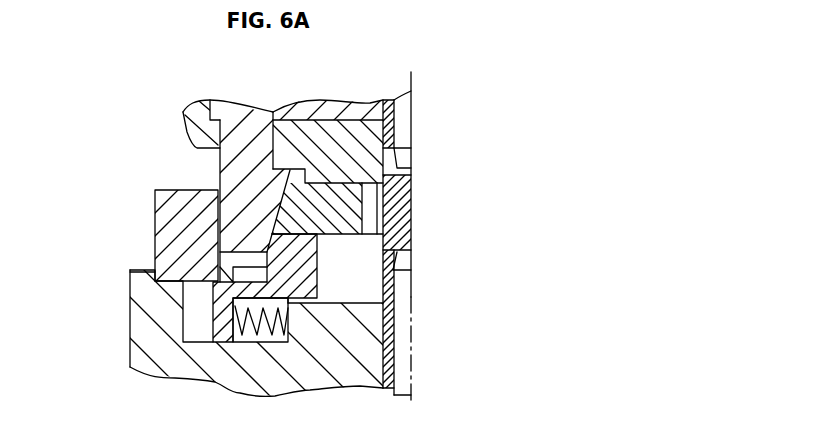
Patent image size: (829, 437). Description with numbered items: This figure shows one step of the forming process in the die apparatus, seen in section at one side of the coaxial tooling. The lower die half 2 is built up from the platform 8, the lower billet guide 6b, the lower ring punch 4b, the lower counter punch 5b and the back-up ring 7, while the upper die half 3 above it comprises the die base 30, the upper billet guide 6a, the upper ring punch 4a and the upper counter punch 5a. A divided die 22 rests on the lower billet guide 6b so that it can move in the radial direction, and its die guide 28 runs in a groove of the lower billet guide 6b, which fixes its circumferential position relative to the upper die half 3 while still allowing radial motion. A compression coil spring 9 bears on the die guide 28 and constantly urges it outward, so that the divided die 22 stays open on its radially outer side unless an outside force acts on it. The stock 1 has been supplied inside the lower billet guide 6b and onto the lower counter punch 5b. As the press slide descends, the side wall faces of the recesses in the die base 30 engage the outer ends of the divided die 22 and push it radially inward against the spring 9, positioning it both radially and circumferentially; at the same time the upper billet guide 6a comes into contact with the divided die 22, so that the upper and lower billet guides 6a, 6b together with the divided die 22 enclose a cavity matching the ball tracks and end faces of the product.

The stock 1 is at (403, 193).
The lower die half 2 is at (103, 353).
The upper die half 3 is at (153, 109).
The upper ring punch 4a is at (391, 102).
The lower ring punch 4b is at (392, 340).
The upper counter punch 5a is at (402, 124).
The lower counter punch 5b is at (404, 291).
The upper billet guide 6a is at (314, 130).
The lower billet guide 6b is at (355, 287).
The back-up ring 7 is at (172, 190).
The platform 8 is at (140, 283).
The spring 9 is at (238, 340).
The divided die 22 is at (370, 223).
The die guide 28 is at (306, 303).
The die base 30 is at (247, 123).